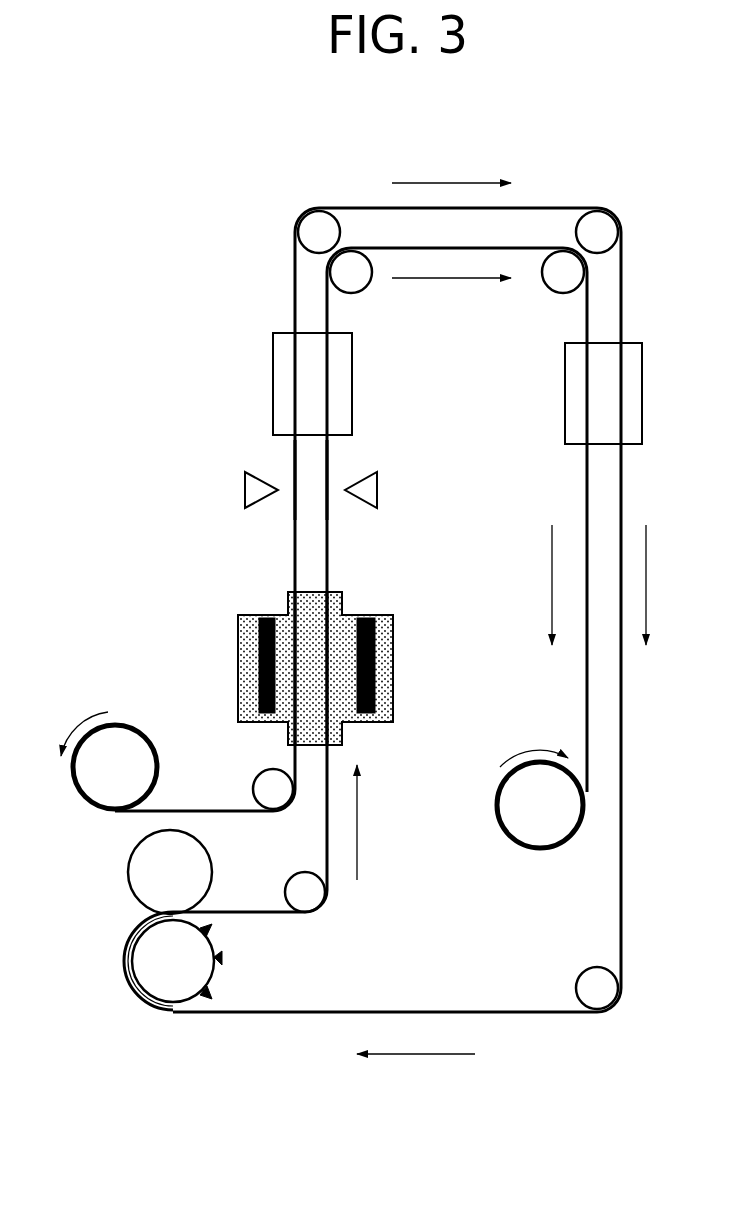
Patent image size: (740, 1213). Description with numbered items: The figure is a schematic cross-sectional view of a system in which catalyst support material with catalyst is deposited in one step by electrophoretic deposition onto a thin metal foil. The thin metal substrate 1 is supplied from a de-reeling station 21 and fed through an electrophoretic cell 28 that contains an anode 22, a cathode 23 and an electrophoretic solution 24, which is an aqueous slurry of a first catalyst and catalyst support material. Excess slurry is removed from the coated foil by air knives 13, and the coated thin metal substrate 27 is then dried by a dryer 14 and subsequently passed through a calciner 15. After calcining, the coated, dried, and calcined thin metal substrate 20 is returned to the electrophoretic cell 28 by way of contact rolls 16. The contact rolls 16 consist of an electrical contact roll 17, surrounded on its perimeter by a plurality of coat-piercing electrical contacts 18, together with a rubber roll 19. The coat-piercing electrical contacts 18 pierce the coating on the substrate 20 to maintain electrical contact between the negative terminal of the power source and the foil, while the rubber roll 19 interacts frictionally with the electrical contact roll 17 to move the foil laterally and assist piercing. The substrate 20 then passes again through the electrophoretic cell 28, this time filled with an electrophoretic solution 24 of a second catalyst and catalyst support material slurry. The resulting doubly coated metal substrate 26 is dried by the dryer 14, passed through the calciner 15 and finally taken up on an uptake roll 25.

The thin metal substrate 1 is at (172, 811).
The air knives 13 is at (245, 487).
The dryer 14 is at (273, 382).
The calciner 15 is at (567, 387).
The contact rolls 16 is at (130, 947).
The electrical contact roll 17 is at (215, 955).
The coat-piercing electrical contacts 18 is at (217, 962).
The rubber roll 19 is at (137, 848).
The coated, dried, and calcined thin metal substrate 20 is at (366, 1008).
The de-reeling station 21 is at (118, 724).
The anode 22 is at (268, 616).
The cathode 23 is at (368, 616).
The electrophoretic solution 24 is at (383, 697).
The uptake roll 25 is at (500, 781).
The doubly coated metal substrate 26 is at (329, 470).
The coated thin metal substrate 27 is at (295, 470).
The electrophoretic cell 28 is at (393, 657).